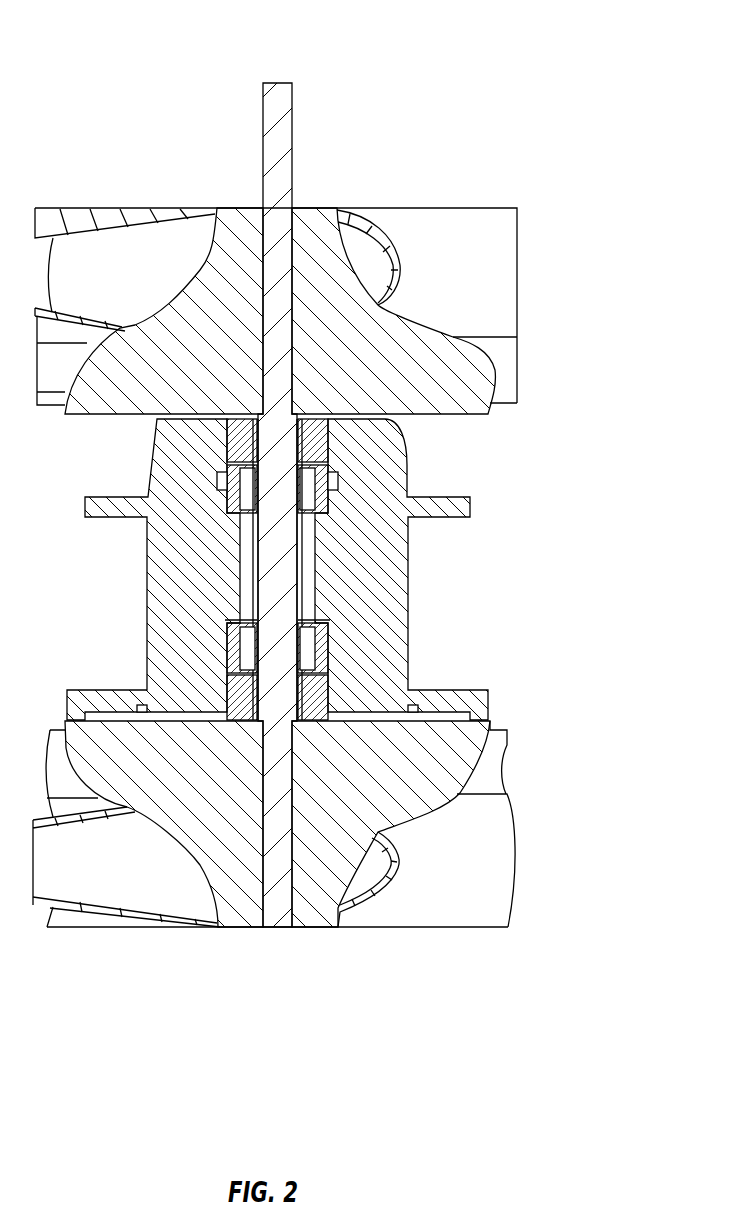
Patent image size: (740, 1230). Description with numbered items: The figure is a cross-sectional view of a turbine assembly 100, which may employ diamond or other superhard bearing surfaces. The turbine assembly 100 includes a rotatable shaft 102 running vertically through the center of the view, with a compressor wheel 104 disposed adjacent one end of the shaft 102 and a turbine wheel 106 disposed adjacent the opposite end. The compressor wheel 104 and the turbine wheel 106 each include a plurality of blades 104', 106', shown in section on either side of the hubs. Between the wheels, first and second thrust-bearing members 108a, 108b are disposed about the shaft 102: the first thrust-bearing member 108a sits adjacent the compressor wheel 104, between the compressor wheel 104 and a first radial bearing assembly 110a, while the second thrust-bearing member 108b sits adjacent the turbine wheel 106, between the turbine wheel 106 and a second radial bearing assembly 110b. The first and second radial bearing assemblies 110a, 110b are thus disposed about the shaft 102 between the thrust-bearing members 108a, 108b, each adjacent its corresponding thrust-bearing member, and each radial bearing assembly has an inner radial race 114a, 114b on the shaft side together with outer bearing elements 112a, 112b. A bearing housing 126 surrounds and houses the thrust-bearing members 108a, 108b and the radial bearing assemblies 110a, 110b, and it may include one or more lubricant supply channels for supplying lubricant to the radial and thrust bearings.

The turbine assembly 100 is at (572, 82).
The rotatable shaft 102 is at (284, 120).
The compressor wheel 104 is at (285, 289).
The blades 104' is at (320, 306).
The turbine wheel 106 is at (346, 824).
The blades 106' is at (320, 824).
The first thrust-bearing member 108a is at (238, 432).
The second thrust-bearing member 108b is at (238, 687).
The first radial bearing assembly 110a is at (224, 498).
The second radial bearing assembly 110b is at (227, 641).
The first bearing outer race 112a is at (327, 505).
The second bearing outer race 112b is at (315, 622).
The inner radial race 114a is at (247, 497).
The inner radial race 114b is at (240, 622).
The bearing housing 126 is at (386, 498).